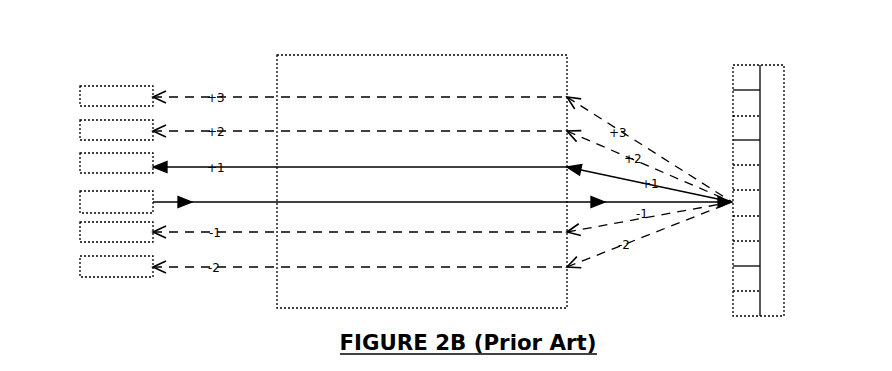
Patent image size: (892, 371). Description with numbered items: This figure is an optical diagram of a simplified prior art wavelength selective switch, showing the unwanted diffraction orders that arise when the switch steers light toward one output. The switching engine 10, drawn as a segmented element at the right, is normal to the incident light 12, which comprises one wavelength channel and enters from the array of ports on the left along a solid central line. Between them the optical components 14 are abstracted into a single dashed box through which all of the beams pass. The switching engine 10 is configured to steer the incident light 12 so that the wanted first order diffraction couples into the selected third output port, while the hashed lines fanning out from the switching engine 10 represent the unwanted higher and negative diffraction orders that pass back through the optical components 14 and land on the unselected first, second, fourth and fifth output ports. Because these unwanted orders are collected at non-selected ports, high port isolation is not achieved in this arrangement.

The switching engine 10 is at (780, 64).
The incident light 12 is at (80, 203).
The optical components 14 is at (541, 54).